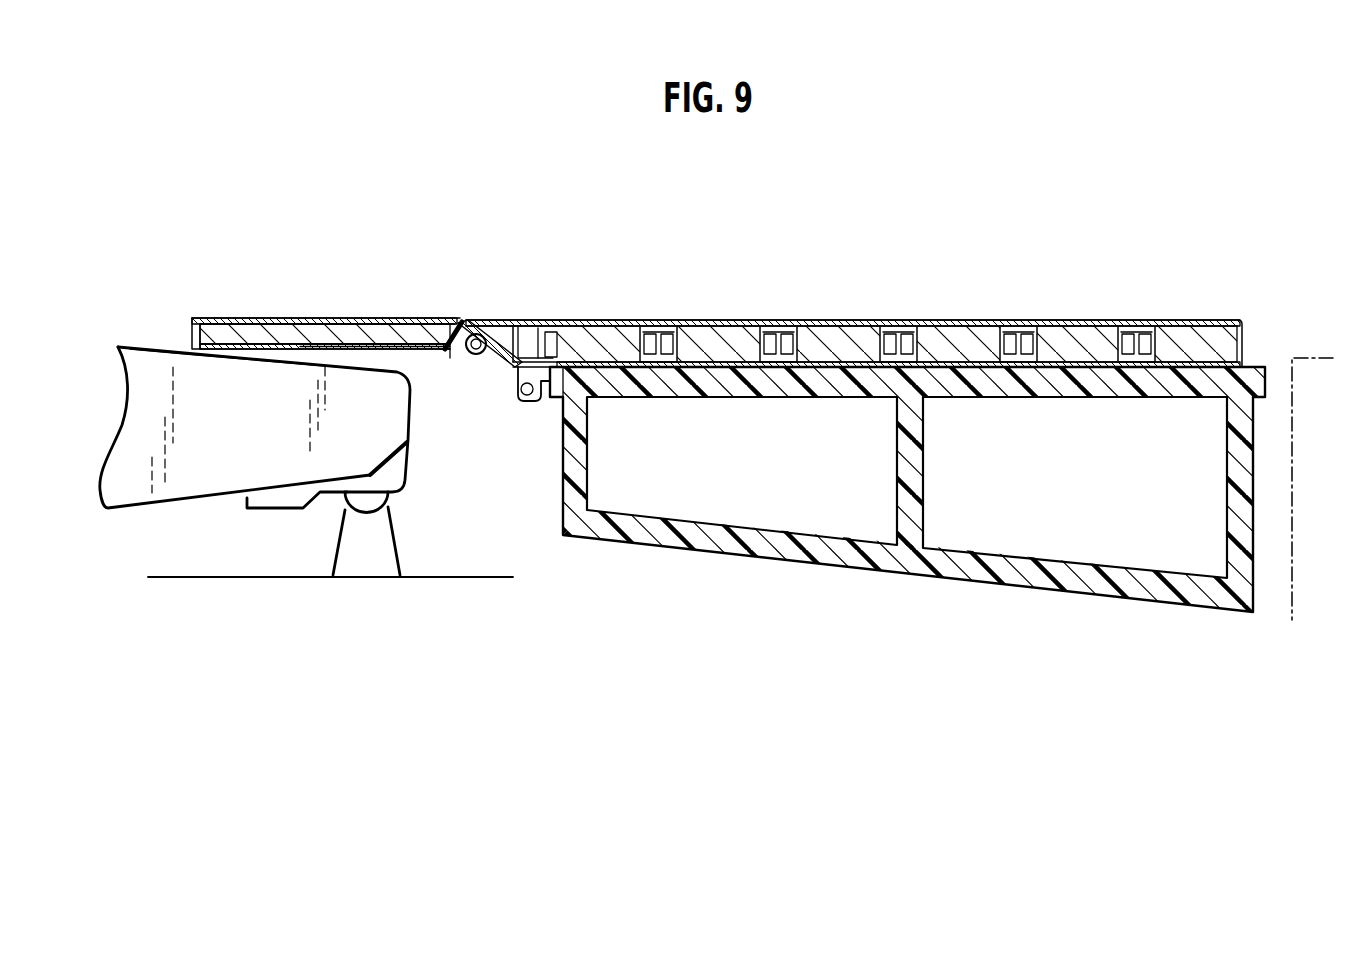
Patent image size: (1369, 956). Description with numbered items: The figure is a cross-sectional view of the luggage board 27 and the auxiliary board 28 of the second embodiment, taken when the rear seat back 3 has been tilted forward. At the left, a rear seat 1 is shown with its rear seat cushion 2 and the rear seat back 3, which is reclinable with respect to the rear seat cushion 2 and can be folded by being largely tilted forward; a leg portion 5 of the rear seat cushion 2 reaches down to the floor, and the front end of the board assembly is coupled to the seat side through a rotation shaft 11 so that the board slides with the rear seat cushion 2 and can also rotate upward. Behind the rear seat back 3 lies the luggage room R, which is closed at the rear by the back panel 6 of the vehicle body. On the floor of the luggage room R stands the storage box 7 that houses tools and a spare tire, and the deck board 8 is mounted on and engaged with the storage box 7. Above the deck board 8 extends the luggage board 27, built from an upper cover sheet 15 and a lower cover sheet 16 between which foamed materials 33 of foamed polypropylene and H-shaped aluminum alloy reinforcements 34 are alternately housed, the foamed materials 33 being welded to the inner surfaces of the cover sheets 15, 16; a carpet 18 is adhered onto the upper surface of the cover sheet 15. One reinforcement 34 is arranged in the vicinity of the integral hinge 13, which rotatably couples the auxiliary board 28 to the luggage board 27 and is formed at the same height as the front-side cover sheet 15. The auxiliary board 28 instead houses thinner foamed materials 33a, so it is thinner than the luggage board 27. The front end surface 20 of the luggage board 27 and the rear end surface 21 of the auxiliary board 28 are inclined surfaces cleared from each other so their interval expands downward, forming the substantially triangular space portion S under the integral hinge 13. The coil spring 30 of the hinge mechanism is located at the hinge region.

The rear seat 1 is at (116, 412).
The rear seat cushion 2 is at (280, 503).
The rear seat back 3 is at (148, 346).
The leg portion 5 is at (365, 560).
The back panel 6 is at (1284, 394).
The storage box 7 is at (918, 580).
The deck board 8 is at (1053, 398).
The rotation shaft 11 is at (524, 403).
The integral hinge 13 is at (476, 320).
The cover sheet (front surface side) 15 is at (945, 335).
The cover sheet (back surface side) 16 is at (741, 368).
The carpet 18 is at (660, 322).
The end surface of luggage board 20 is at (512, 321).
The end surface of auxiliary board 21 is at (430, 340).
The luggage board 27 is at (1073, 320).
The auxiliary board 28 is at (305, 319).
The coil spring 30 is at (466, 358).
The foamed material 33 is at (783, 335).
The foamed material 33a is at (239, 332).
The reinforcement 34 is at (882, 335).
The luggage room R is at (876, 177).
The space portion S is at (492, 358).